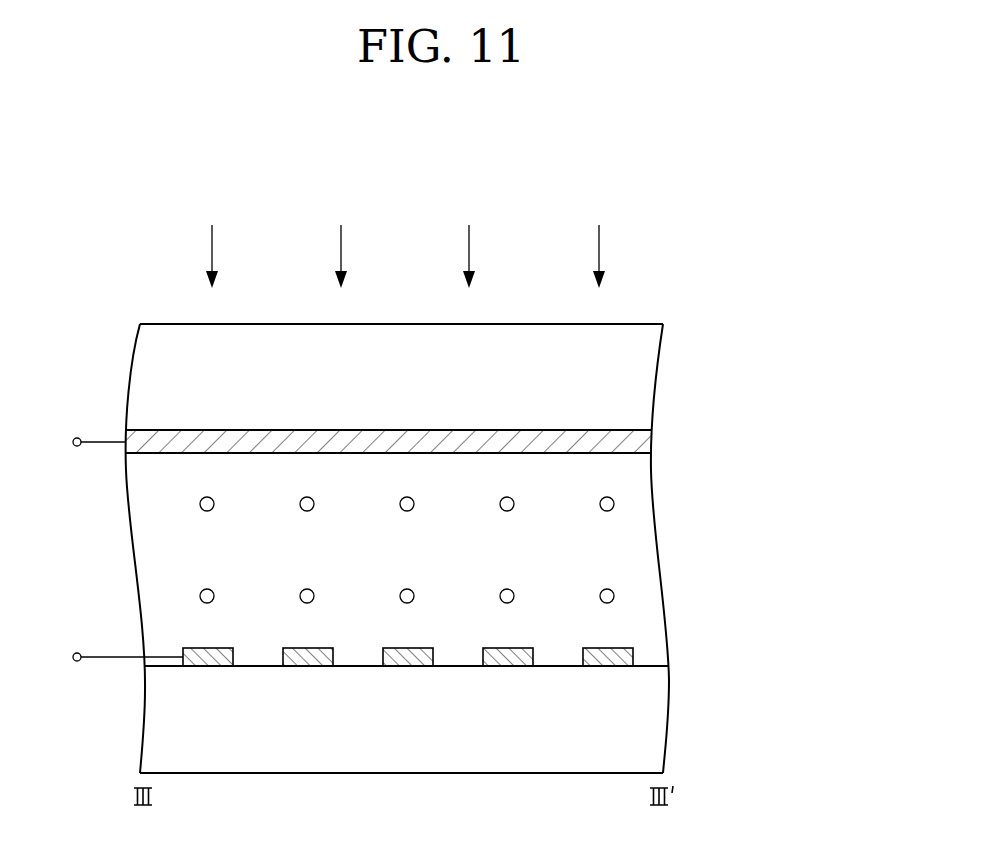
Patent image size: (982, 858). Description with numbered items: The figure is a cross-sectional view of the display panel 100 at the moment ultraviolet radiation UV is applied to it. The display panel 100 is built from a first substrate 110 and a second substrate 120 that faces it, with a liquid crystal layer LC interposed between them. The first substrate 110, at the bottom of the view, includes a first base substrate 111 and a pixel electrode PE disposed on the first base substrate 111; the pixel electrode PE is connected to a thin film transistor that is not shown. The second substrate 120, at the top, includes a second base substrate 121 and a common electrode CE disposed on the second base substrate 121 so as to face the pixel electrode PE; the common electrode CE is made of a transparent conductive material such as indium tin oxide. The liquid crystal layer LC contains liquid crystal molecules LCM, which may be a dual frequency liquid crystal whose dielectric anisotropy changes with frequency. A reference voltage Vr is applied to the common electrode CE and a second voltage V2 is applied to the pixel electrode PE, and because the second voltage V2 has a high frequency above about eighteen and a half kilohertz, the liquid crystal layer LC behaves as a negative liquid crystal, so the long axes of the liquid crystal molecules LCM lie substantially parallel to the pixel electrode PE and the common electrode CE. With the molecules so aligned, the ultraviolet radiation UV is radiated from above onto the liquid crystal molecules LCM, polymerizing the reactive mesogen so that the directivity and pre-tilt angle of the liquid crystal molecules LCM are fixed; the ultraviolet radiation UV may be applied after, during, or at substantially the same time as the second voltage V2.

The display panel 100 is at (806, 405).
The first substrate 110 is at (471, 708).
The first base substrate 111 is at (746, 648).
The second substrate 120 is at (461, 391).
The second base substrate 121 is at (642, 381).
The common electrode CE is at (426, 444).
The pixel electrode PE is at (626, 655).
The liquid crystal layer LC is at (436, 559).
The liquid crystal molecules LCM is at (614, 504).
The ultraviolet radiation UV is at (610, 210).
The reference voltage Vr is at (85, 442).
The second voltage V2 is at (114, 657).